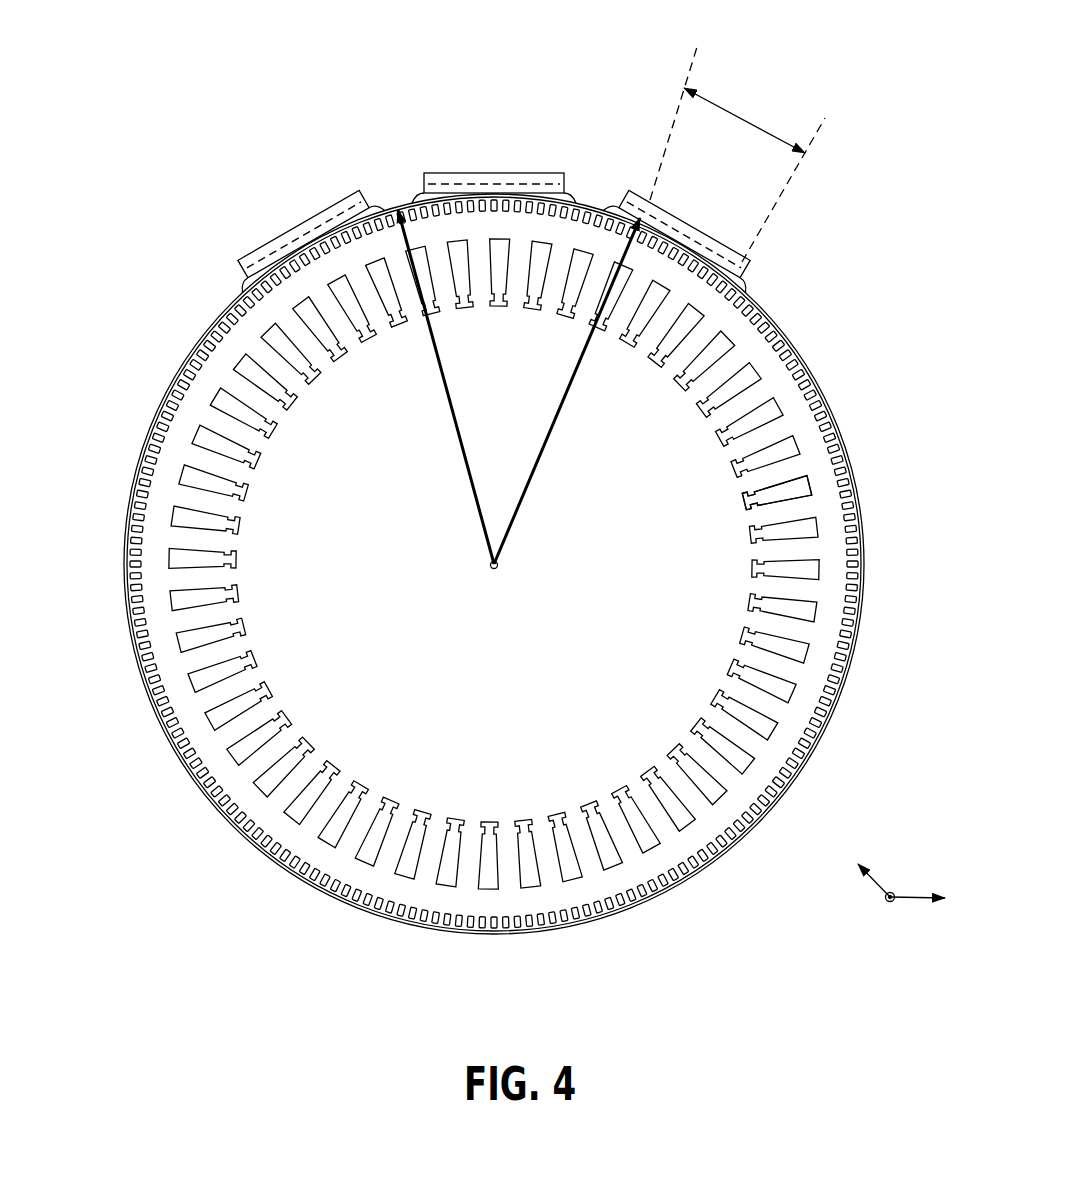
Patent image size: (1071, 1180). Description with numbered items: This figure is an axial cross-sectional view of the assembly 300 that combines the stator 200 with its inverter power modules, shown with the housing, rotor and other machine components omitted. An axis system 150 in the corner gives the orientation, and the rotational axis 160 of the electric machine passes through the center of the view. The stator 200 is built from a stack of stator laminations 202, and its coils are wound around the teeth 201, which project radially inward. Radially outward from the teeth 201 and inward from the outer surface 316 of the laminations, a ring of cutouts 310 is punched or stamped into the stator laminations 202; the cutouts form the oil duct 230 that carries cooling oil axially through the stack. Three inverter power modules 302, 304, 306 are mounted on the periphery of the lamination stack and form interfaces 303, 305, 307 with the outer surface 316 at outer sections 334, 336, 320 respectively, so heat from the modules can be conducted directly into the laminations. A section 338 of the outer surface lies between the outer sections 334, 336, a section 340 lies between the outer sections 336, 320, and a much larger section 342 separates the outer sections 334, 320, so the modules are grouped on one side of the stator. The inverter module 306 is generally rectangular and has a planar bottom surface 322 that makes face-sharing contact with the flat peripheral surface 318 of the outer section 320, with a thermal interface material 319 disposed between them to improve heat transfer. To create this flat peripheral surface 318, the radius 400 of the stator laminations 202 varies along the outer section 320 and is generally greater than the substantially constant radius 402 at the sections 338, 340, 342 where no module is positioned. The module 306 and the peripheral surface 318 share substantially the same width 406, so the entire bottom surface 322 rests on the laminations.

The axis system 150 is at (926, 857).
The rotational axis 160 is at (498, 568).
The stator 200 is at (902, 364).
The teeth 201 is at (745, 485).
The stator laminations 202 is at (834, 429).
The oil duct 230 is at (798, 344).
The assembly 300 is at (318, 70).
The inverter power module 302 is at (272, 236).
The interface 303 is at (247, 281).
The inverter power module 304 is at (525, 170).
The interface 305 is at (421, 190).
The inverter power module 306 is at (703, 222).
The interface 307 is at (744, 277).
The cutouts 310 is at (767, 313).
The outer surface 316 is at (863, 546).
The peripheral surface 318 is at (716, 253).
The thermal interface material 319 is at (728, 258).
The outer section 320 is at (652, 197).
The bottom surface 322 is at (705, 252).
The outer section 334 is at (316, 232).
The outer section 336 is at (503, 178).
The section 338 is at (383, 195).
The section 340 is at (595, 196).
The section 342 is at (111, 511).
The radius 400 is at (545, 442).
The radius 402 is at (452, 412).
The width 406 is at (737, 154).